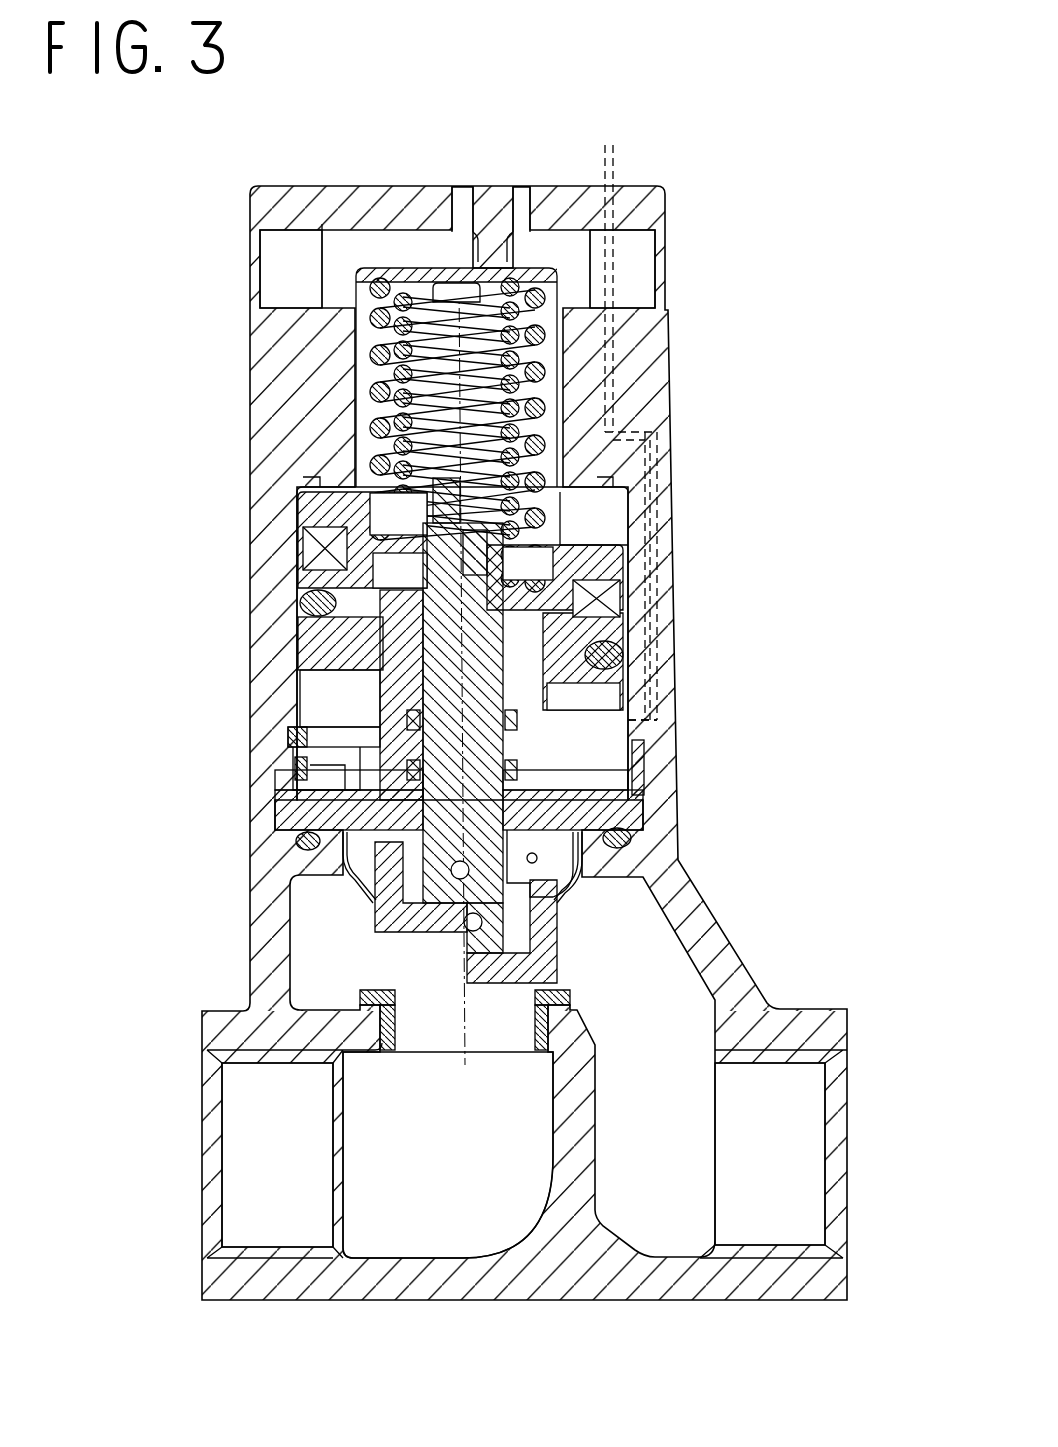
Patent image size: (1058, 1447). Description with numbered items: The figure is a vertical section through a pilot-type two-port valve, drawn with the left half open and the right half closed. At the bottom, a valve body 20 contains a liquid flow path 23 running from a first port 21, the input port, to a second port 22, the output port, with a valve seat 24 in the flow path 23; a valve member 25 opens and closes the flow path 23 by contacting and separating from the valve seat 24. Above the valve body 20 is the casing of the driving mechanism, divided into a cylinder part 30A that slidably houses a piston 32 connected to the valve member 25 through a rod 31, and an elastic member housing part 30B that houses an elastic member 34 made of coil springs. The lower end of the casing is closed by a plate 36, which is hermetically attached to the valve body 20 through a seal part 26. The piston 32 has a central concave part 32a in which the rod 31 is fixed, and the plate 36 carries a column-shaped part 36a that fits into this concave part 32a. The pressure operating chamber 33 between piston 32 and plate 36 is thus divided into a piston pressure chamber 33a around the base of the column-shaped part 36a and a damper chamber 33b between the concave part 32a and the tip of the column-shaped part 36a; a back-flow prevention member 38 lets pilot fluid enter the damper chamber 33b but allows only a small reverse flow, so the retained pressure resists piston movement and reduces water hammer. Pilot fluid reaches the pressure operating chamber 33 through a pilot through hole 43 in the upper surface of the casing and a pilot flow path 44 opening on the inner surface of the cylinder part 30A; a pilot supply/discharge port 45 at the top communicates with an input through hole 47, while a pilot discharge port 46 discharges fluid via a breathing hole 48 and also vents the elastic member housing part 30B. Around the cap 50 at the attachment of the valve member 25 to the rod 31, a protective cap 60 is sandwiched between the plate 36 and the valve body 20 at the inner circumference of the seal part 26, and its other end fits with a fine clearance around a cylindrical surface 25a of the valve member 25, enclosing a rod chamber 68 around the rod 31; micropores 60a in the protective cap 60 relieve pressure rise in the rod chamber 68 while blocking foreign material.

The valve body 20 is at (738, 953).
The first port 21 is at (245, 1113).
The second port 22 is at (800, 1108).
The liquid flow path 23 is at (489, 1209).
The valve seat 24 is at (383, 983).
The valve member 25 is at (388, 910).
The cylindrical surface 25a is at (560, 970).
The seal part 26 is at (637, 840).
The cylinder part 30A is at (630, 510).
The elastic member housing part 30B is at (630, 365).
The rod 31 is at (435, 706).
The piston 32 is at (607, 560).
The concave part 32a is at (560, 603).
The pressure operating chamber 33 is at (287, 677).
The piston pressure chamber 33a is at (295, 770).
The damper chamber 33b is at (350, 560).
The elastic member 34 is at (353, 372).
The plate 36 is at (678, 802).
The column-shaped part 36a is at (618, 655).
The back-flow prevention member 38 is at (300, 603).
The pilot through hole 43 is at (627, 413).
The pilot flow path 44 is at (657, 520).
The pilot supply/discharge port 45 is at (272, 250).
The pilot discharge port 46 is at (627, 277).
The input through hole 47 is at (462, 197).
The breathing hole 48 is at (522, 197).
The cap 50 is at (523, 940).
The protective cap 60 is at (582, 893).
The micropores 60a is at (337, 860).
The rod chamber 68 is at (552, 877).